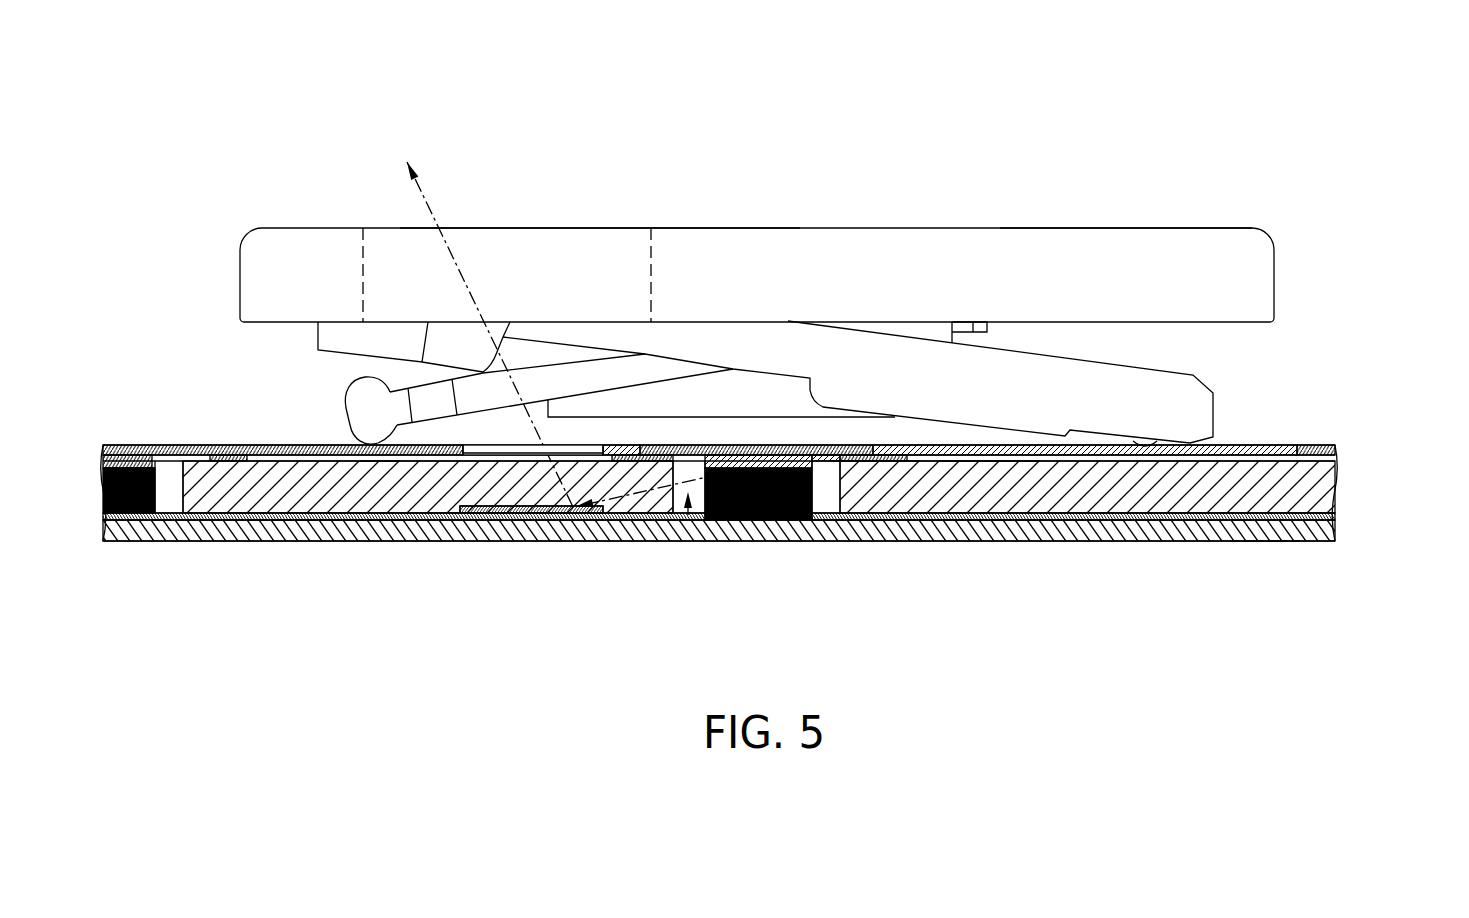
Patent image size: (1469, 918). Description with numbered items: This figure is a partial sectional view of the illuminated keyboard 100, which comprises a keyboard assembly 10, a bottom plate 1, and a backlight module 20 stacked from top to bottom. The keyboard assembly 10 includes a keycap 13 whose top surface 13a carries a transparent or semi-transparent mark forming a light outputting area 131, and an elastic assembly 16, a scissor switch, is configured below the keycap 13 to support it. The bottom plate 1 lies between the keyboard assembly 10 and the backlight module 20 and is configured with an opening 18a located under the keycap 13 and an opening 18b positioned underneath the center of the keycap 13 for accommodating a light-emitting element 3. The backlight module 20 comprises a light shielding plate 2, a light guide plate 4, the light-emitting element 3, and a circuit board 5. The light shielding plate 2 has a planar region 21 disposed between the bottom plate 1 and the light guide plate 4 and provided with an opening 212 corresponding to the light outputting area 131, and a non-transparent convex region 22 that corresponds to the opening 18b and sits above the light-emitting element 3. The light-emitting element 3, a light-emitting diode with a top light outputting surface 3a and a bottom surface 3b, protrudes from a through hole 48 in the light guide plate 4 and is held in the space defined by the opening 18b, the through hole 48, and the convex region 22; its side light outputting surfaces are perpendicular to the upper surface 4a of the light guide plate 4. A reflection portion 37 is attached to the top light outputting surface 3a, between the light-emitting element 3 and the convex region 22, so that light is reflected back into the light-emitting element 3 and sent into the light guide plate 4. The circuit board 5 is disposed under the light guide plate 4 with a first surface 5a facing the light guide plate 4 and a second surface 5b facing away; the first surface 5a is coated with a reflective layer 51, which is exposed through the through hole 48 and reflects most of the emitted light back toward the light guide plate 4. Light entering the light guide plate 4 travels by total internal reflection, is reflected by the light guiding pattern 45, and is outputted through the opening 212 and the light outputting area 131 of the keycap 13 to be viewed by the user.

The illuminated keyboard 100 is at (300, 90).
The keyboard assembly 10 is at (838, 308).
The keycap 13 is at (810, 246).
The light outputting area 131 is at (552, 250).
The top surface of the keycap 13a is at (1108, 228).
The elastic assembly 16 is at (1190, 405).
The opening 18a is at (518, 447).
The opening 18b is at (853, 433).
The reflection portion 37 is at (747, 460).
The upper surface of the light guide plate 4a is at (990, 461).
The bottom plate 1 is at (719, 499).
The backlight module 20 is at (785, 500).
The light guide plate 4 is at (746, 480).
The reflective layer 51 is at (1335, 515).
The circuit board 5 is at (747, 495).
The first surface 5a is at (292, 520).
The second surface 5b is at (1262, 541).
The opening 212 is at (383, 455).
The light guiding pattern 45 is at (543, 510).
The through hole 48 is at (688, 512).
The light-emitting element 3 is at (751, 533).
The top light outputting surface 3a is at (727, 520).
The bottom surface 3b is at (790, 520).
The convex region 22 is at (823, 452).
The planar region 21 is at (890, 462).
The light shielding plate 2 is at (905, 590).